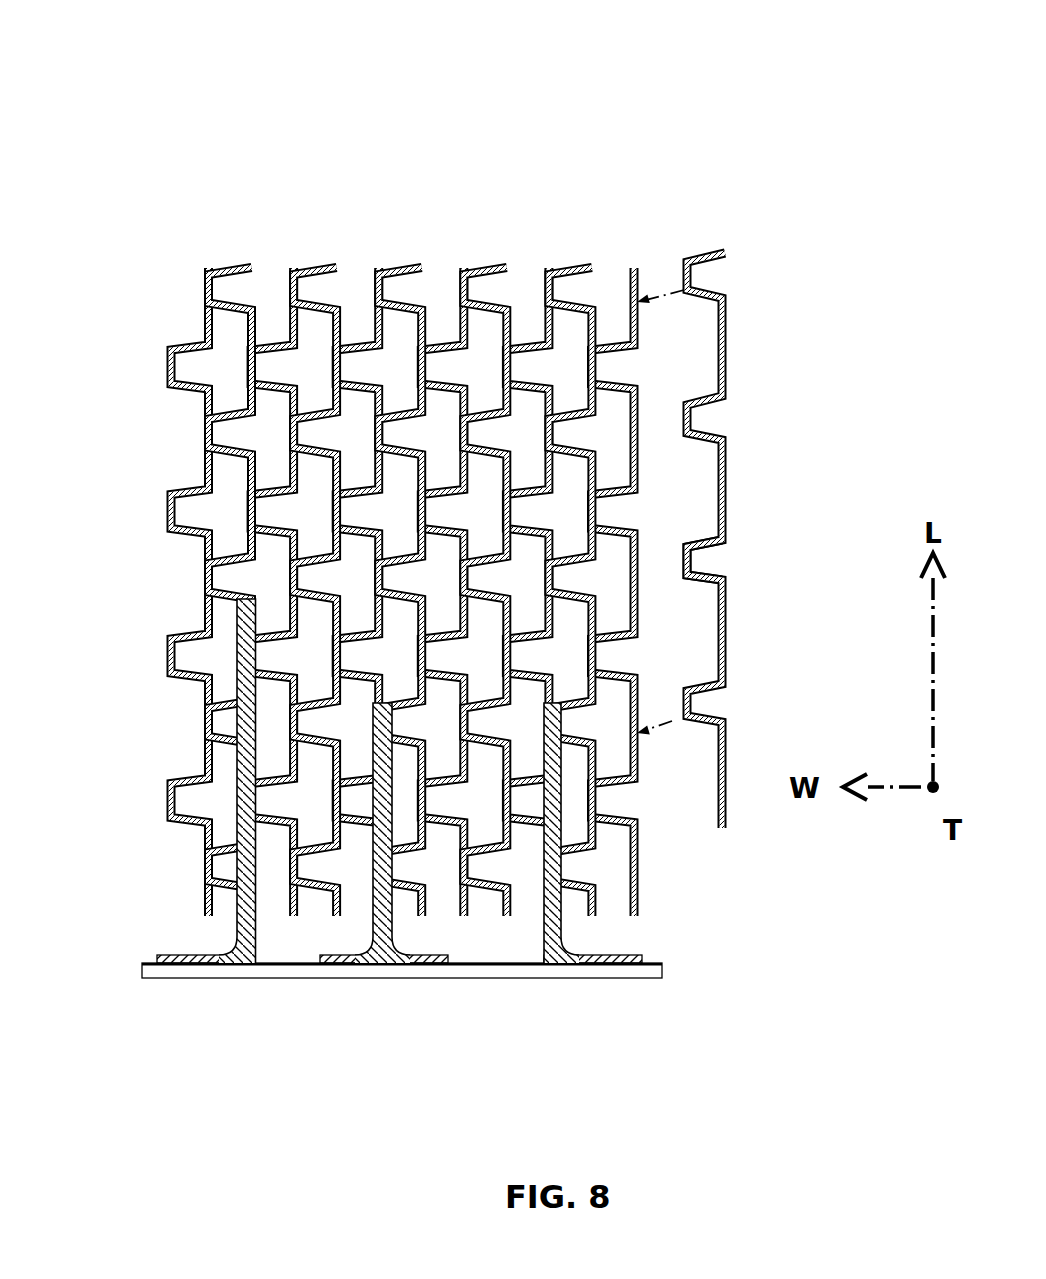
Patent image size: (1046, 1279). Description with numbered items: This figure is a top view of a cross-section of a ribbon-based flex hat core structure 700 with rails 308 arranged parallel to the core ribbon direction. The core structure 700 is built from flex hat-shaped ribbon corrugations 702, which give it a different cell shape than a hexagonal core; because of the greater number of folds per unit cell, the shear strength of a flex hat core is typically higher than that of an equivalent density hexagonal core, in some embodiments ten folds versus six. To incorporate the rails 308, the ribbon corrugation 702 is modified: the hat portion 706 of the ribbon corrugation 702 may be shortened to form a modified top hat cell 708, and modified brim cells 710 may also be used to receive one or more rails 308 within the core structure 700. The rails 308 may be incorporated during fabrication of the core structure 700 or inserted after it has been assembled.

The ribbon-based flex hat core structure 700 is at (439, 548).
The flex hat-shaped ribbon corrugation 702 is at (728, 358).
The hat portion 706 is at (700, 538).
The modified top hat cell 708 is at (600, 865).
The modified brim cell 710 is at (222, 822).
The rail 308 is at (211, 976).